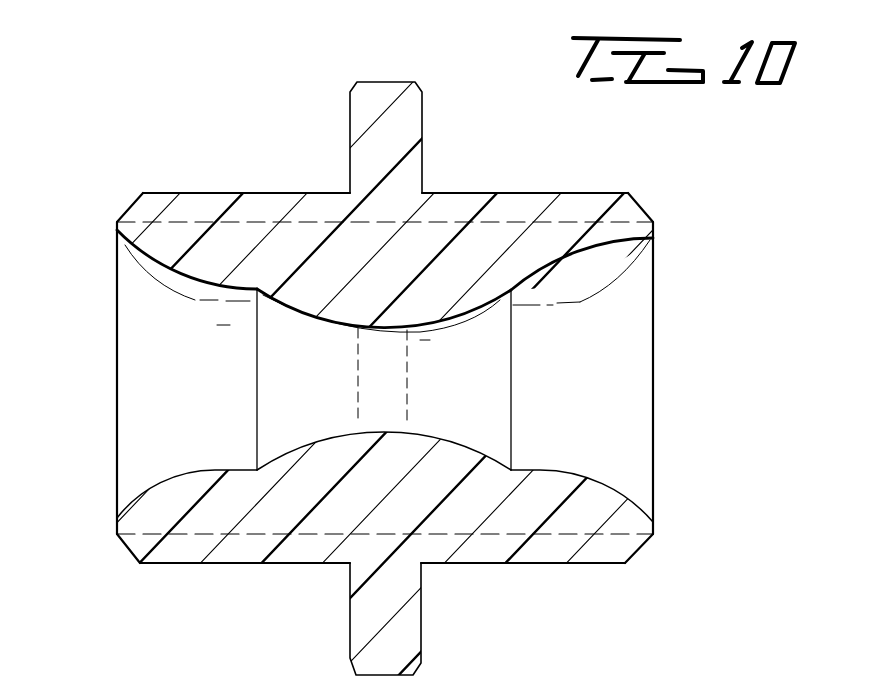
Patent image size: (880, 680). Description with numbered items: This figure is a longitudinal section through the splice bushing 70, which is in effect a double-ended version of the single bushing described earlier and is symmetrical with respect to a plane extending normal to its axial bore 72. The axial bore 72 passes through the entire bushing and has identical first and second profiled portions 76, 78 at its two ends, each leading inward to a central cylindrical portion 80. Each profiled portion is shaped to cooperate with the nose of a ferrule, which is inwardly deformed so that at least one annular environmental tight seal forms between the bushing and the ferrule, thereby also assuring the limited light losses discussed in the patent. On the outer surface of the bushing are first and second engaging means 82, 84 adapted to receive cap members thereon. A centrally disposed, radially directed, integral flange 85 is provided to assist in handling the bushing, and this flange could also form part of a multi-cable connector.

The splice bushing 70 is at (343, 100).
The axial bore 72 is at (150, 373).
The first profiled portion 76 is at (162, 283).
The second profiled portion 78 is at (490, 309).
The central cylindrical portion 80 is at (396, 333).
The first engaging means 82 is at (200, 200).
The second engaging means 84 is at (555, 207).
The flange 85 is at (352, 617).